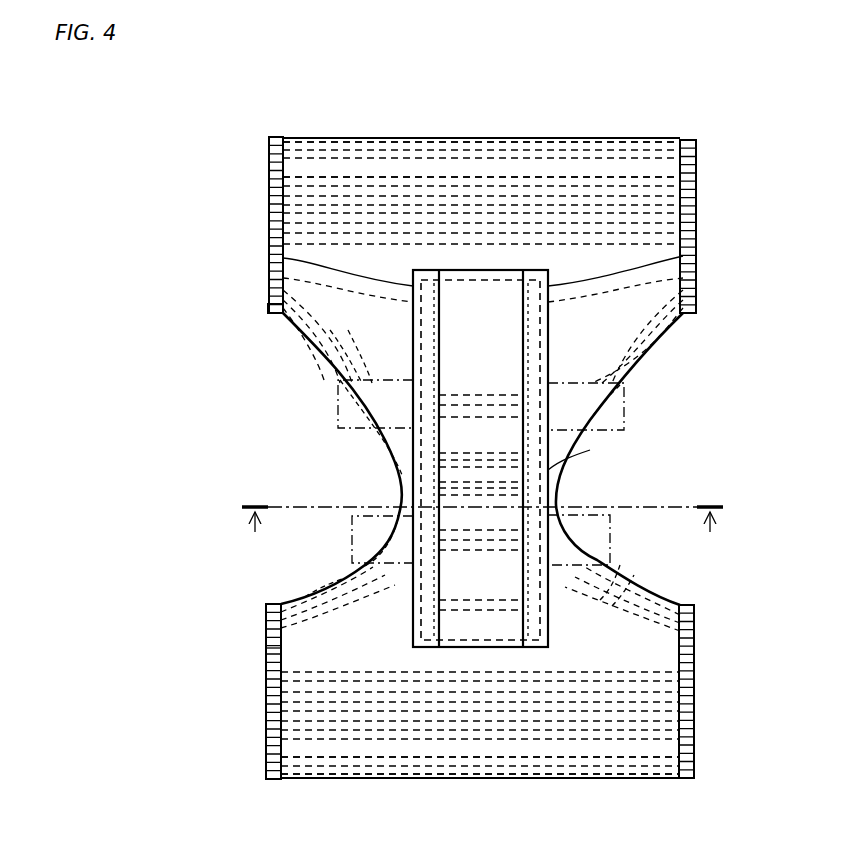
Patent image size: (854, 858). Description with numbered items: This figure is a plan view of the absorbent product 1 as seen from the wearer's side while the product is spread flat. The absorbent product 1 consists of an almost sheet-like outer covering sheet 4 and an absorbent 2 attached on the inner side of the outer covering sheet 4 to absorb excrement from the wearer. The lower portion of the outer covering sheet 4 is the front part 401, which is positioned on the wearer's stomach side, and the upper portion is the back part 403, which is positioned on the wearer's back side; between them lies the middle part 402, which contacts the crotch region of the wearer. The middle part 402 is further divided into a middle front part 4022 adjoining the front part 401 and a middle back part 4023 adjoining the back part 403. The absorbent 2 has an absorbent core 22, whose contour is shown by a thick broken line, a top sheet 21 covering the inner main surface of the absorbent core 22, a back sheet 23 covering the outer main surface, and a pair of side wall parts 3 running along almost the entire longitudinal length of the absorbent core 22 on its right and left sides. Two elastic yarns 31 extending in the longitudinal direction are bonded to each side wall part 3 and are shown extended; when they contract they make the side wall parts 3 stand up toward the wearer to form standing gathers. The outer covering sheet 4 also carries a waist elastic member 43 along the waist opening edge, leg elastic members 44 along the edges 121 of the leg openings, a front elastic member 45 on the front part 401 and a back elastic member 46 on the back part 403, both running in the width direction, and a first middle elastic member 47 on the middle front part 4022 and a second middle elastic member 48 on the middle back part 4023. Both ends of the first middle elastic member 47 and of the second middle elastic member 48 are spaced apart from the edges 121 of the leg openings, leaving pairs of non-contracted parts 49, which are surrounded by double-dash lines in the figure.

The absorbent product 1 is at (256, 110).
The absorbent 2 is at (626, 470).
The side wall part 3 is at (283, 256).
The outer covering sheet 4 is at (269, 158).
The top sheet 21 is at (497, 478).
The absorbent core 22 is at (560, 460).
The back sheet 23 is at (512, 650).
The elastic yarn 31 is at (269, 278).
The waist elastic member 43 is at (632, 148).
The leg elastic member 44 is at (323, 340).
The front elastic member 45 is at (628, 718).
The back elastic member 46 is at (637, 194).
The first middle elastic member 47 is at (480, 545).
The second middle elastic member 48 is at (483, 403).
The non-contracted part 49 is at (396, 397).
The edge of leg opening 121 is at (636, 373).
The front part 401 is at (373, 658).
The middle part 402 is at (162, 526).
The back part 403 is at (375, 257).
The middle front part 4022 is at (397, 588).
The middle back part 4023 is at (397, 368).